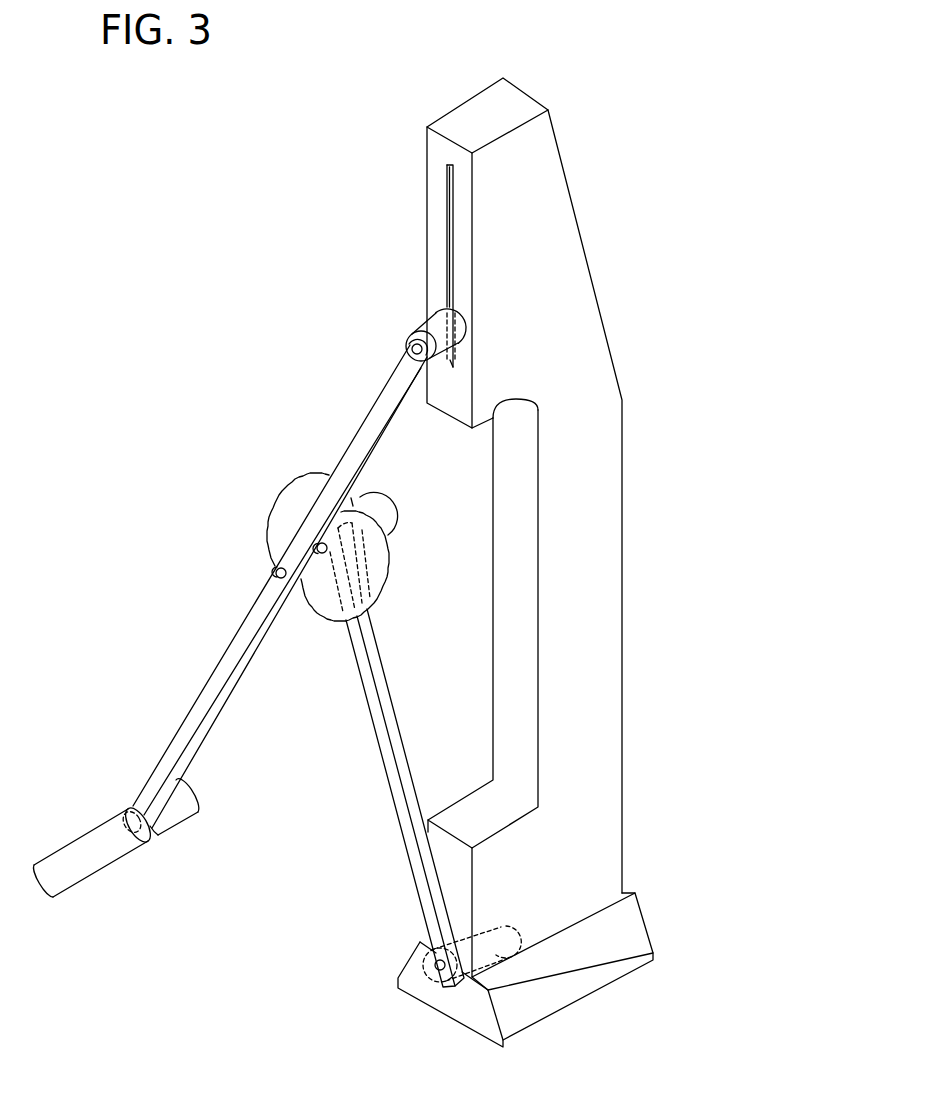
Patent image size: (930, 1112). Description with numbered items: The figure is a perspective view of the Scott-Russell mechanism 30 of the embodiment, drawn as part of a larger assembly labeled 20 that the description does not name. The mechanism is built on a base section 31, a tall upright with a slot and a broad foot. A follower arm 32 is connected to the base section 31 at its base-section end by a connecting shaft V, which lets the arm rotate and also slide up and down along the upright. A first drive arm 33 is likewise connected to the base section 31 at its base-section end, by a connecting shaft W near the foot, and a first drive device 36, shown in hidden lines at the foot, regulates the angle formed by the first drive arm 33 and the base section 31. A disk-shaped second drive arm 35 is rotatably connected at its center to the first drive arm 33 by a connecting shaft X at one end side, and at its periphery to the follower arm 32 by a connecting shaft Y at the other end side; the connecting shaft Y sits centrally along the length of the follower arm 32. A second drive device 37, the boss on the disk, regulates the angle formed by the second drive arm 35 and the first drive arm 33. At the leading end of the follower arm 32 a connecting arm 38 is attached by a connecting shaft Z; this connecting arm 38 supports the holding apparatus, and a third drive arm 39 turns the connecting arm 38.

The moving device 20 is at (668, 91).
The Scott-Russell mechanism 30 is at (630, 248).
The base section 31 is at (607, 717).
The follower arm 32 is at (362, 437).
The first drive arm 33 is at (400, 792).
The second drive arm 35 is at (386, 568).
The first drive device 36 is at (503, 927).
The second drive device 37 is at (390, 523).
The connecting arm 38 is at (92, 840).
The third drive arm 39 is at (178, 805).
The connecting shaft V is at (406, 352).
The connecting shaft W is at (416, 972).
The connecting shaft X is at (310, 548).
The connecting shaft Y is at (270, 576).
The connecting shaft Z is at (125, 838).